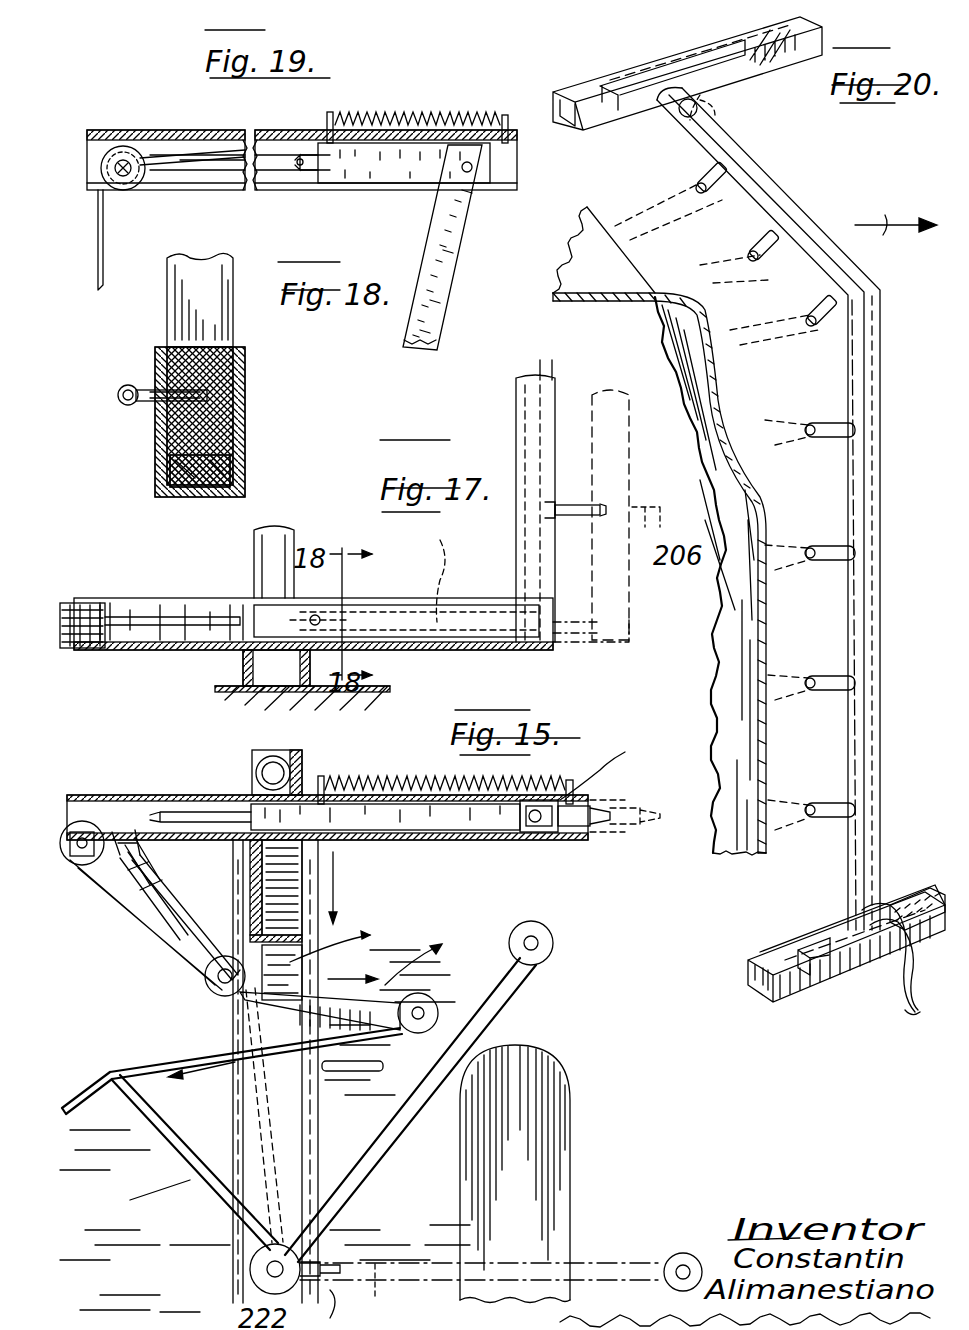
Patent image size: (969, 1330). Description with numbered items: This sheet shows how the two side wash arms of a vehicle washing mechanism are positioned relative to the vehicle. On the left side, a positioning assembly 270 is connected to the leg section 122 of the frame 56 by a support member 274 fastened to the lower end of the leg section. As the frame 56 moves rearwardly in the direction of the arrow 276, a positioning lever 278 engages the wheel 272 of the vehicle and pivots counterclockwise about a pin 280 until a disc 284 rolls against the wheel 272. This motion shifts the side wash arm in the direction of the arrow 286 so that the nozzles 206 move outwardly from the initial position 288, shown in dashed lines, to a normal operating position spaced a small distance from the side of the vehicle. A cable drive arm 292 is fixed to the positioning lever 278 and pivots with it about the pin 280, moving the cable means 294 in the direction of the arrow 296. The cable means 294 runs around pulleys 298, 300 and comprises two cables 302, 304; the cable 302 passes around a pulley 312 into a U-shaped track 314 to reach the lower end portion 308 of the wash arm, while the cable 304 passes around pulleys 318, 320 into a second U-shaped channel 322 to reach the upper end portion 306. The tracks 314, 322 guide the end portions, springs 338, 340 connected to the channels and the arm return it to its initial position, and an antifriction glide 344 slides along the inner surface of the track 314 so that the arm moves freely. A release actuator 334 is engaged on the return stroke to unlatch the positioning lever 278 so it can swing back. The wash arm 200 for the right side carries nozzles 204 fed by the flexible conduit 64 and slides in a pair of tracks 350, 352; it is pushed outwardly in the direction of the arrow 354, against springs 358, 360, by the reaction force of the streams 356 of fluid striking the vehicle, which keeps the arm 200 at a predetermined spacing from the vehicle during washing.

In FIG. 15, the frame 56 is at (215, 792).
In FIG. 20, the flexible conduit 64 is at (905, 1015).
In FIG. 15, the leg section 122 is at (258, 890).
In FIG. 20, the wash arm 200 is at (805, 225).
In FIG. 20, the nozzles 204 is at (700, 182).
In FIG. 17, the nozzles 206 is at (600, 505).
In FIG. 15, the nozzles 206 is at (572, 842).
In FIG. 15, the positioning assembly 270 is at (192, 1229).
In FIG. 15, the wheel 272 is at (578, 1080).
In FIG. 15, the support member 274 is at (327, 955).
In FIG. 15, the arrow 276 is at (335, 880).
In FIG. 15, the positioning lever 278 is at (390, 1145).
In FIG. 15, the pin 280 is at (270, 1270).
In FIG. 15, the disc 284 is at (555, 950).
In FIG. 15, the arrow 286 is at (508, 842).
In FIG. 15, the initial position 288 is at (640, 808).
In FIG. 15, the cable drive arm 292 is at (245, 1130).
In FIG. 15, the cable means 294 is at (135, 1075).
In FIG. 15, the arrow 296 is at (240, 1008).
In FIG. 15, the pulley 298 is at (440, 1012).
In FIG. 15, the pulley 300 is at (205, 970).
In FIG. 17, the cable 302 is at (145, 618).
In FIG. 15, the cable 302 is at (165, 950).
In FIG. 19, the cable 304 is at (105, 228).
In FIG. 15, the cable 304 is at (165, 872).
In FIG. 19, the upper end portion 306 is at (378, 185).
In FIG. 18, the lower end portion 308 is at (175, 425).
In FIG. 17, the lower end portion 308 is at (385, 638).
In FIG. 15, the lower end portion 308 is at (380, 804).
In FIG. 17, the pulley 312 is at (104, 652).
In FIG. 15, the pulley 312 is at (88, 828).
In FIG. 18, the U-shaped track 314 is at (245, 400).
In FIG. 17, the U-shaped track 314 is at (150, 652).
In FIG. 15, the U-shaped track 314 is at (458, 842).
In FIG. 15, the pulley 318 is at (175, 830).
In FIG. 19, the pulley 320 is at (175, 158).
In FIG. 19, the U-shaped channel 322 is at (140, 148).
In FIG. 15, the release actuator 334 is at (350, 1072).
In FIG. 18, the spring 338 is at (130, 385).
In FIG. 17, the spring 338 is at (423, 564).
In FIG. 15, the spring 338 is at (609, 760).
In FIG. 19, the spring 340 is at (455, 118).
In FIG. 18, the antifriction glide 344 is at (245, 470).
In FIG. 20, the track 350 is at (580, 88).
In FIG. 20, the track 352 is at (800, 998).
In FIG. 20, the arrow 354 is at (896, 211).
In FIG. 20, the streams 356 is at (638, 220).
In FIG. 20, the spring 358 is at (770, 70).
In FIG. 20, the spring 360 is at (918, 878).